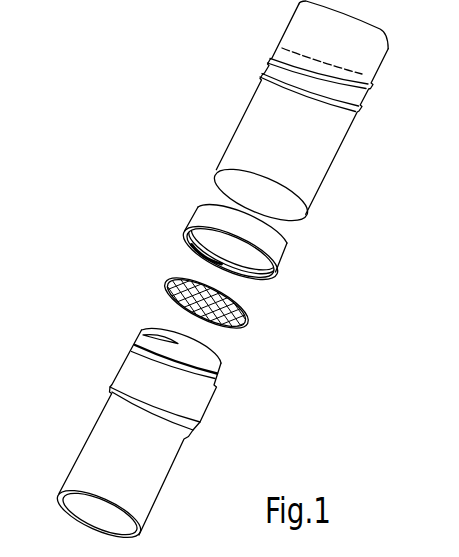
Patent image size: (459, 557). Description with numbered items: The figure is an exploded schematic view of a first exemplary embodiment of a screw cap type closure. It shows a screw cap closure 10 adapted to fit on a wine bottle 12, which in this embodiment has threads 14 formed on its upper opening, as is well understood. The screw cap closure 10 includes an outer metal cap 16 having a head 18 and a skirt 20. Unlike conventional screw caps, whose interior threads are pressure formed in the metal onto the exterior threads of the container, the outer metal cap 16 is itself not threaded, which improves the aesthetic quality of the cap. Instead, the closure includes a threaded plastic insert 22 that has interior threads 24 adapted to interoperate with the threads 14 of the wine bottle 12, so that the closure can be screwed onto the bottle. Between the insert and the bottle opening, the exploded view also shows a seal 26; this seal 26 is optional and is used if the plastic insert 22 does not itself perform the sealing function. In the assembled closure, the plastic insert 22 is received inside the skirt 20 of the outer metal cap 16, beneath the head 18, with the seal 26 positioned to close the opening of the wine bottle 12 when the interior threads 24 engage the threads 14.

The screw cap closure 10 is at (300, 315).
The wine bottle 12 is at (95, 428).
The threads 14 is at (137, 337).
The outer metal cap 16 is at (252, 97).
The head 18 is at (382, 60).
The skirt 20 is at (328, 170).
The threaded plastic insert 22 is at (192, 212).
The interior threads 24 is at (195, 253).
The seal 26 is at (165, 288).